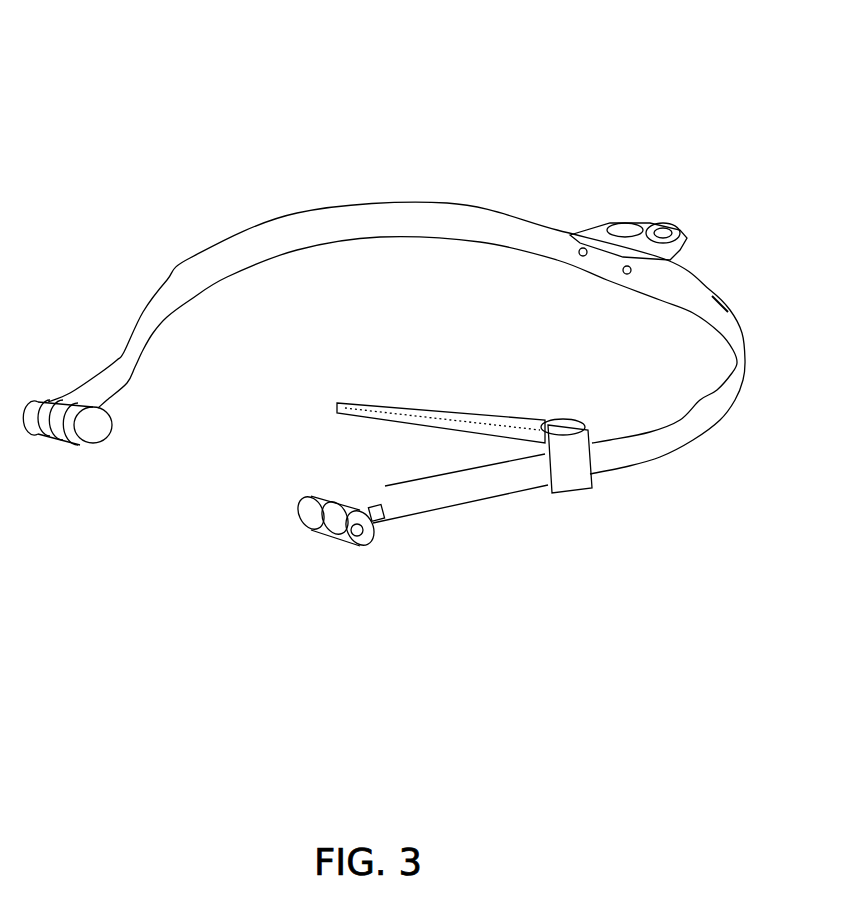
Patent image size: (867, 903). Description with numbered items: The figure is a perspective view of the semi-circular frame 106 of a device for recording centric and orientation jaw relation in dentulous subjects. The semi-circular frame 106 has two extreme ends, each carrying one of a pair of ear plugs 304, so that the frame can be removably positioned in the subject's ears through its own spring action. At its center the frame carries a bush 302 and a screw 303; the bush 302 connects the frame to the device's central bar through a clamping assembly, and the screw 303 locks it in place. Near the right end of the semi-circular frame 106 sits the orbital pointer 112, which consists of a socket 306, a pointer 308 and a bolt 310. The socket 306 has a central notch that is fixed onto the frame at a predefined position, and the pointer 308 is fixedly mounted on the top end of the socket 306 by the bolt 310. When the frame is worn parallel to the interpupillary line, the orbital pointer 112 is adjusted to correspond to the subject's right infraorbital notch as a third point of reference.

The semi-circular frame 106 is at (365, 615).
The orbital pointer 112 is at (598, 420).
The bush 302 is at (603, 233).
The screw 303 is at (680, 227).
The ear plugs 304 is at (317, 507).
The socket 306 is at (566, 474).
The pointer 308 is at (446, 413).
The bolt 310 is at (560, 425).